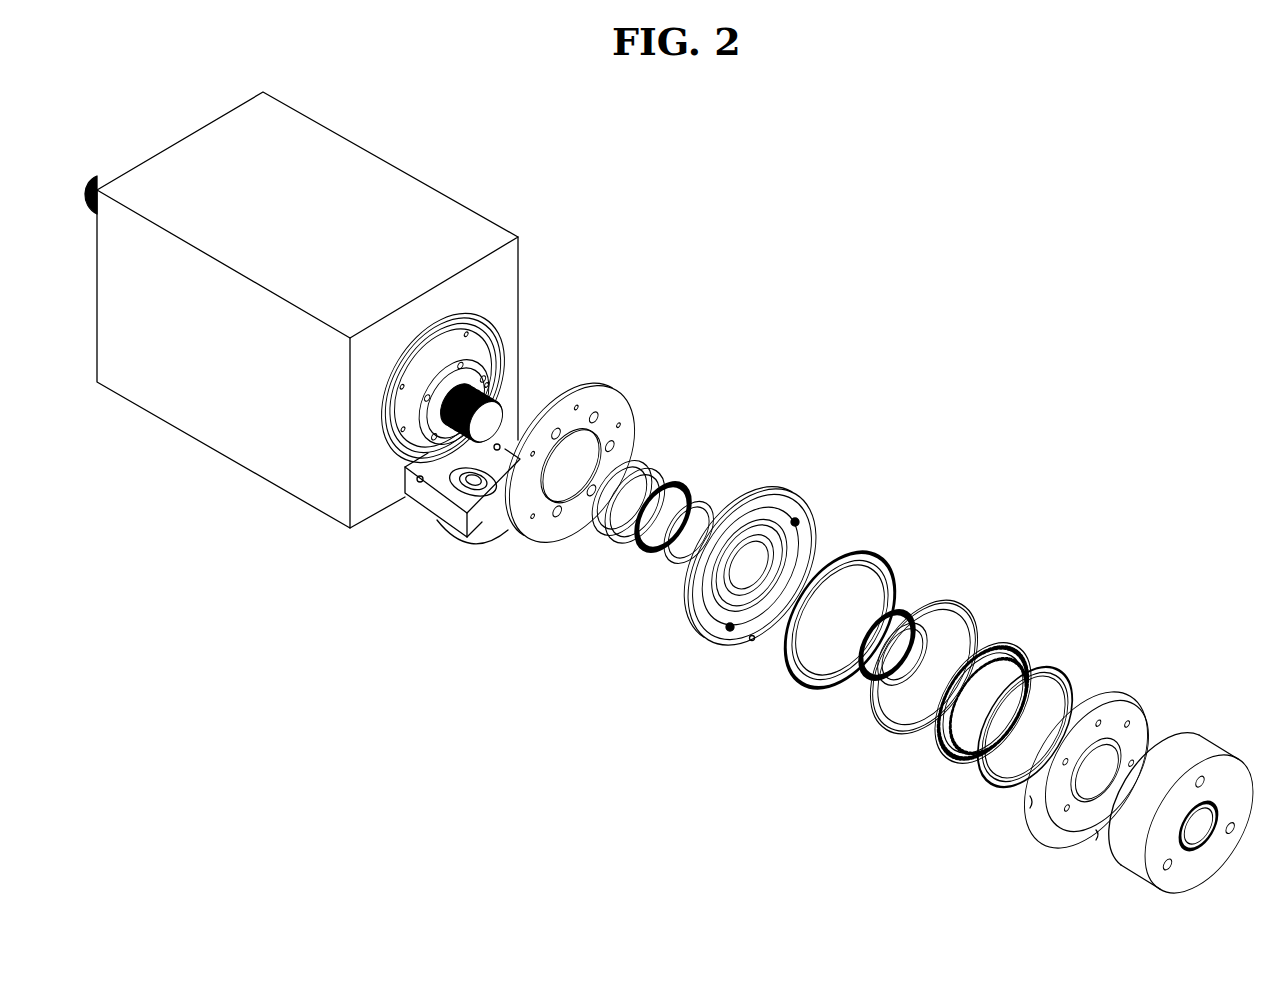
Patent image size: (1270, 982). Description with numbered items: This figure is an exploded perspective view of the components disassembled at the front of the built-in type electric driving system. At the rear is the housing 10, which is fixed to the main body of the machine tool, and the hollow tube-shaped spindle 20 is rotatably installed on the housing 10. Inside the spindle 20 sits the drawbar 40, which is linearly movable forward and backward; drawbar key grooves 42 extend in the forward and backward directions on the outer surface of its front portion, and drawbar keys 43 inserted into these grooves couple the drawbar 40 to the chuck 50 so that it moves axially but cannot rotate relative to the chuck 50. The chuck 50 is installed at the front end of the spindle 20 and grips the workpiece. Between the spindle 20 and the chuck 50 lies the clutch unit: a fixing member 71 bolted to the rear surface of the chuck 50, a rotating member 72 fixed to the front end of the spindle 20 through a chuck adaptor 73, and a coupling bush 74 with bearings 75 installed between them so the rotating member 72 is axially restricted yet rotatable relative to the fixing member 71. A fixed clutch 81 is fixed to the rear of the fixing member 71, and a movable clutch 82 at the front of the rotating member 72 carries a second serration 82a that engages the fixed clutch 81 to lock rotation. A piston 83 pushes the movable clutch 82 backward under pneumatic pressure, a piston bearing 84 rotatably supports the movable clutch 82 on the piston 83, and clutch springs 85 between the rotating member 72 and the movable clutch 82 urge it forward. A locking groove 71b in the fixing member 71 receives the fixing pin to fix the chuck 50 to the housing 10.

The housing 10 is at (355, 163).
The spindle 20 is at (395, 462).
The drawbar 40 is at (480, 365).
The drawbar key groove 42 is at (497, 385).
The drawbar key 43 is at (472, 325).
The chuck 50 is at (1200, 750).
The fixing member 71 is at (1069, 782).
The locking groove 71b is at (1028, 800).
The rotating member 72 is at (781, 494).
The chuck adaptor 73 is at (604, 398).
The coupling bush 74 is at (643, 470).
The bearing 75 is at (702, 495).
The fixed clutch 81 is at (972, 605).
The movable clutch 82 is at (848, 609).
The second serration 82a is at (858, 553).
The piston 83 is at (1068, 672).
The piston bearing 84 is at (1025, 643).
The clutch spring 85 is at (805, 520).